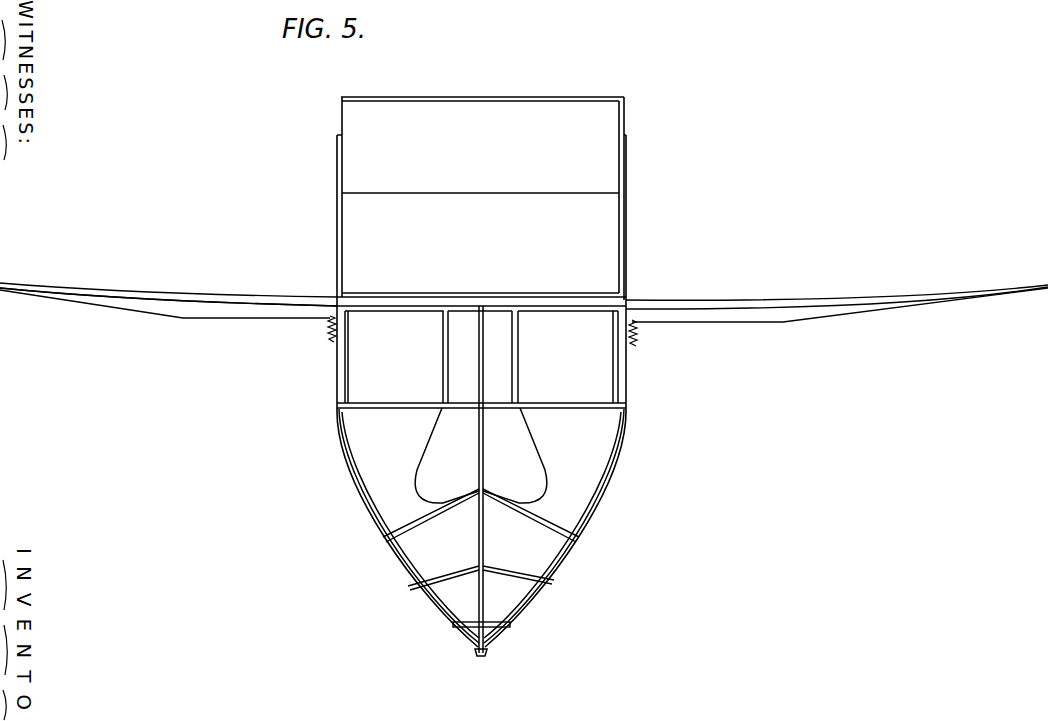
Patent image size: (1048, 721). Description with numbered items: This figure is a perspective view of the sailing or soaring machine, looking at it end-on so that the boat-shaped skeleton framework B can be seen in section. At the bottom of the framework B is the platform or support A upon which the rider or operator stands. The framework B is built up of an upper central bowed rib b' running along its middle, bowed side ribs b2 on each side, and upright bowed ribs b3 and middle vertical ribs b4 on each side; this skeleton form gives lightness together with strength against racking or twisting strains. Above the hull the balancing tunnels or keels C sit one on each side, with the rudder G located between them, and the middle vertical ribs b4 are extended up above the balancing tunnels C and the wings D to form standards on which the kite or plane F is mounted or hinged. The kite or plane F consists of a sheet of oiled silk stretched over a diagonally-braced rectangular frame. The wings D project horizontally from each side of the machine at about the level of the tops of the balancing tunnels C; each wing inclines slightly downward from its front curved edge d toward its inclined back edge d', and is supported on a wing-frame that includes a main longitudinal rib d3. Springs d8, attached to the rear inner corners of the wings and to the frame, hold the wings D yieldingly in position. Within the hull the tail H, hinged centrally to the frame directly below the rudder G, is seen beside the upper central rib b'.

The kite or plane F is at (462, 150).
The wings D is at (524, 290).
The front curved edge d is at (391, 291).
The inclined back edge d' is at (524, 324).
The main longitudinal rib d3 is at (318, 333).
The springs d8 is at (643, 338).
The balancing tunnels or keels C is at (481, 357).
The rudder G is at (479, 362).
The tail H is at (481, 455).
The upper central bowed rib b' is at (494, 481).
The upright bowed ribs b3 is at (620, 499).
The middle vertical ribs b4 is at (606, 526).
The bowed side ribs b2 is at (530, 576).
The framework B is at (483, 553).
The platform or support A is at (492, 618).